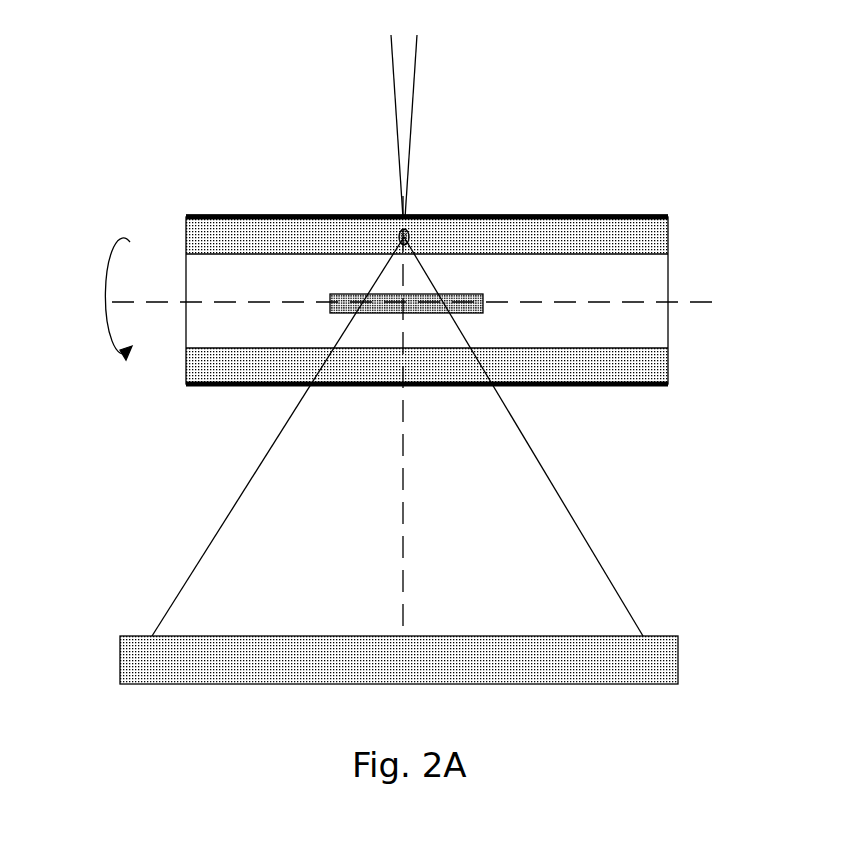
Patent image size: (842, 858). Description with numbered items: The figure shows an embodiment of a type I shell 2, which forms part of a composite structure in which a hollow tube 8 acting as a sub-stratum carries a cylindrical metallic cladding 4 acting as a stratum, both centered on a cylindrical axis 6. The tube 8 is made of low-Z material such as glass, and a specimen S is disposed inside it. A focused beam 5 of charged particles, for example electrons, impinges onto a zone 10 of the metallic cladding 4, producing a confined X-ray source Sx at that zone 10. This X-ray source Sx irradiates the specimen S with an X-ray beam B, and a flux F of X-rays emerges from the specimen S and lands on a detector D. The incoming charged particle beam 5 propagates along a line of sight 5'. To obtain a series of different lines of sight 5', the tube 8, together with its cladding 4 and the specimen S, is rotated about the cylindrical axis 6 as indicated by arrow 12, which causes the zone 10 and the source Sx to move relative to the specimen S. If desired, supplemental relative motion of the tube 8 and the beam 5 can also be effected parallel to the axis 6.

The shell 2 is at (594, 173).
The cylindrical metallic cladding 4 is at (620, 388).
The focused beam of charged particles 5 is at (436, 126).
The axis/line-of-sight 5' is at (444, 542).
The cylindrical axis 6 is at (708, 304).
The hollow tube 8 is at (655, 236).
The zone 10 is at (399, 233).
The arrow 12 is at (112, 320).
The X-ray source Sx is at (430, 191).
The specimen S is at (484, 306).
The X-ray beam B is at (392, 250).
The flux of X-rays F is at (262, 468).
The detector D is at (316, 642).